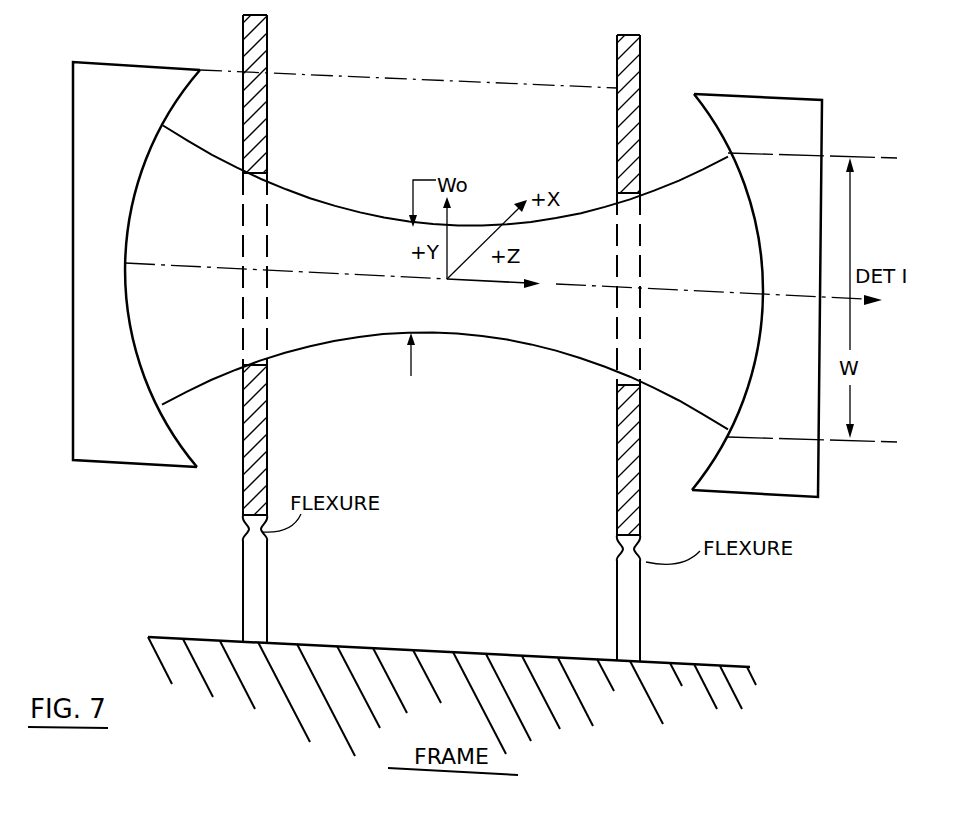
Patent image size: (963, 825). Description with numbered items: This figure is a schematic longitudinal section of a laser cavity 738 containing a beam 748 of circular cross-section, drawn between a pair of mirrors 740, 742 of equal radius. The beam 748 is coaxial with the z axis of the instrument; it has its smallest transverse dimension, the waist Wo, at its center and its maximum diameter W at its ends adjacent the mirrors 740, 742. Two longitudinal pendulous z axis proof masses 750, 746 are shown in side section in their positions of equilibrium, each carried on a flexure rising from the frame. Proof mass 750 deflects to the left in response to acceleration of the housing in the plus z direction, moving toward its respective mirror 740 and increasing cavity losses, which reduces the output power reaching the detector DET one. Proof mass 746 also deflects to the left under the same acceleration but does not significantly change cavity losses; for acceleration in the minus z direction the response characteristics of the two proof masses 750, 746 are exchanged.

The cavity 738 is at (473, 129).
The mirror 740 is at (134, 341).
The mirror 742 is at (752, 362).
The (z) axis proof mass 746 is at (617, 432).
The beam 748 is at (358, 260).
The (z) axis proof mass 750 is at (268, 474).